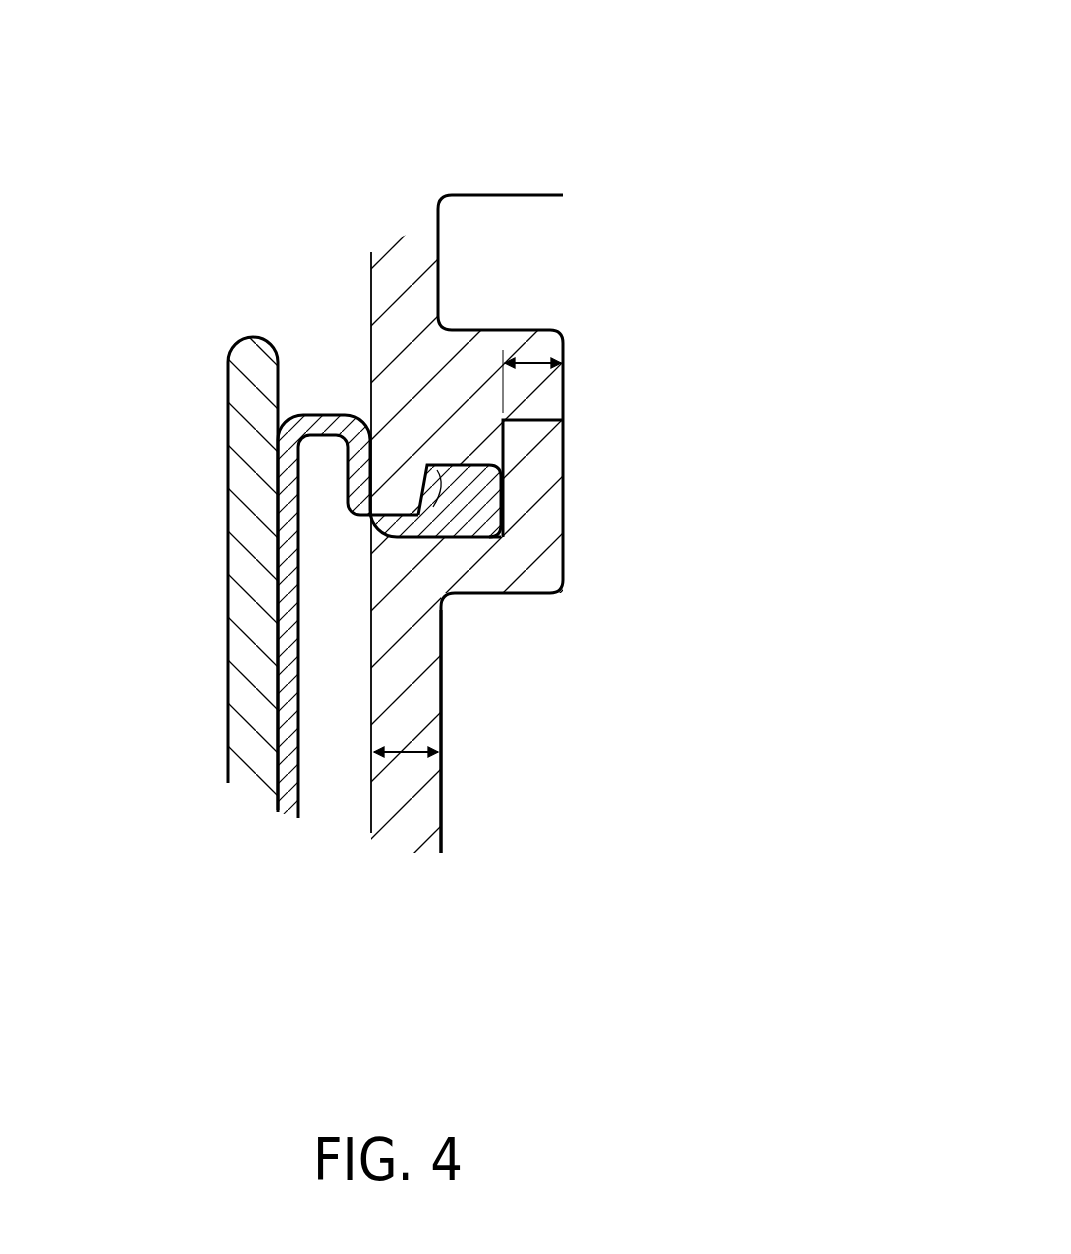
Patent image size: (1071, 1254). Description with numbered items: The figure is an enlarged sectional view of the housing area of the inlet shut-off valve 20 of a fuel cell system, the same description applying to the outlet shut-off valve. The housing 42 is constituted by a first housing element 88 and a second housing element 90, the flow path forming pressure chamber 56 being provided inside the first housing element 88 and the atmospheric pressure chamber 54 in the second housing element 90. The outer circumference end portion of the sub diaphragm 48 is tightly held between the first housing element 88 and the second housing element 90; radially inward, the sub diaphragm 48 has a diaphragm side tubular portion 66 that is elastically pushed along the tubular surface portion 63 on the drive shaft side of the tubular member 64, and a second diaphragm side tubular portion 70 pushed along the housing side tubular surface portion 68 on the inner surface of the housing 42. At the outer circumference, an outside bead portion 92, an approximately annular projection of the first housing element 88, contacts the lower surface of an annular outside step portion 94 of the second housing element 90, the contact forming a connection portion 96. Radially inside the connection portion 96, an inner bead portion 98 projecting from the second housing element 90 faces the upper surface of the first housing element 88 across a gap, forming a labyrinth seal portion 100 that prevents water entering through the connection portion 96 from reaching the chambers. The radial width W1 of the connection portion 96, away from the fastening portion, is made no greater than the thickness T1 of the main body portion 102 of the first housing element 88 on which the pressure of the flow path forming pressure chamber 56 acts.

The inlet shut-off valve 20 is at (562, 148).
The housing 42 is at (420, 775).
The sub diaphragm 48 is at (300, 683).
The atmospheric pressure chamber 54 is at (307, 303).
The flow path forming pressure chamber 56 is at (333, 633).
The tubular surface portion on the drive shaft side 63 is at (280, 383).
The tubular member 64 is at (243, 522).
The diaphragm side tubular portion 66 is at (300, 730).
The housing side tubular surface portion 68 is at (370, 332).
The second diaphragm side tubular portion 70 is at (372, 467).
The first housing element 88 is at (546, 592).
The second housing element 90 is at (417, 310).
The outside bead portion 92 is at (550, 443).
The outside step portion 94 is at (520, 418).
The connection portion 96 is at (538, 400).
The inner bead portion 98 is at (355, 502).
The labyrinth seal portion 100 is at (378, 540).
The main body portion 102 is at (400, 820).
The width of the connection portion W1 is at (510, 360).
The thickness of the main body portion T1 is at (400, 752).